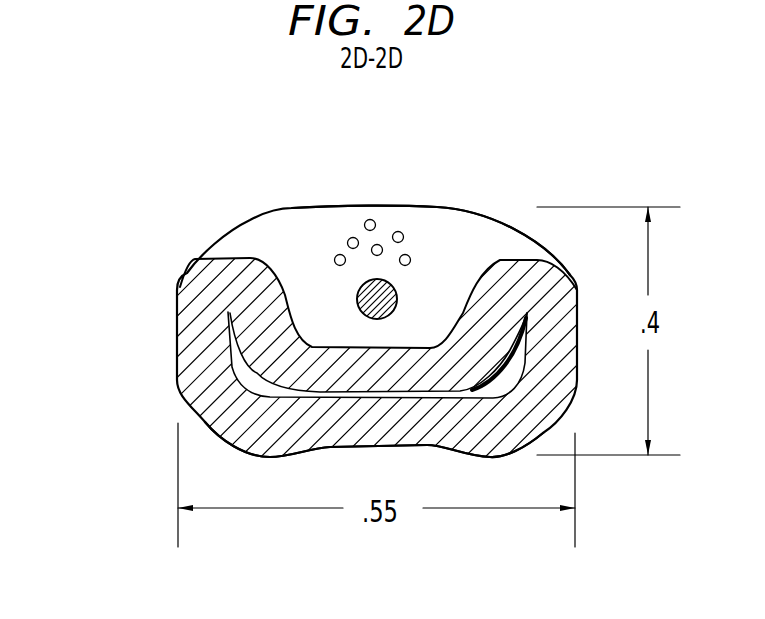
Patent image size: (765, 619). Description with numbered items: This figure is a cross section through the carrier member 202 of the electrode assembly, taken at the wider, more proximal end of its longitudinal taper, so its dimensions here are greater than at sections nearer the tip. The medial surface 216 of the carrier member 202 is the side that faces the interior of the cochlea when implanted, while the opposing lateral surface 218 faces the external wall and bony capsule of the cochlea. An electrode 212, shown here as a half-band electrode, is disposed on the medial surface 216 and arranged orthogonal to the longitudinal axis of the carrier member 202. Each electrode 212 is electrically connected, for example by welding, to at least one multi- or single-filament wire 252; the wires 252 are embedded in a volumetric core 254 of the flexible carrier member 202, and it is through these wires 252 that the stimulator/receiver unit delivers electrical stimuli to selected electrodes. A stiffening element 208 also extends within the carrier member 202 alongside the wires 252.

The carrier member 202 is at (212, 193).
The stiffening element 208 is at (407, 297).
The electrode 212 is at (207, 380).
The medial surface 216 is at (357, 447).
The lateral surface 218 is at (443, 207).
The wire 252 is at (376, 220).
The volumetric core 254 is at (347, 337).